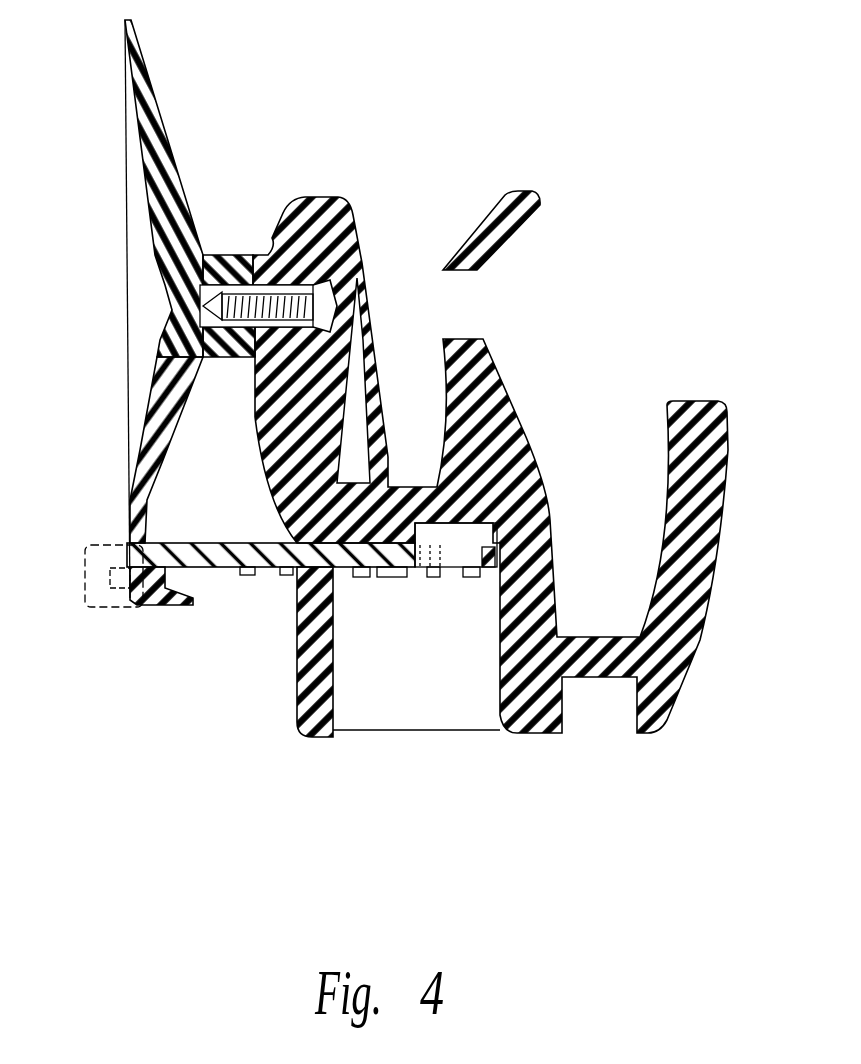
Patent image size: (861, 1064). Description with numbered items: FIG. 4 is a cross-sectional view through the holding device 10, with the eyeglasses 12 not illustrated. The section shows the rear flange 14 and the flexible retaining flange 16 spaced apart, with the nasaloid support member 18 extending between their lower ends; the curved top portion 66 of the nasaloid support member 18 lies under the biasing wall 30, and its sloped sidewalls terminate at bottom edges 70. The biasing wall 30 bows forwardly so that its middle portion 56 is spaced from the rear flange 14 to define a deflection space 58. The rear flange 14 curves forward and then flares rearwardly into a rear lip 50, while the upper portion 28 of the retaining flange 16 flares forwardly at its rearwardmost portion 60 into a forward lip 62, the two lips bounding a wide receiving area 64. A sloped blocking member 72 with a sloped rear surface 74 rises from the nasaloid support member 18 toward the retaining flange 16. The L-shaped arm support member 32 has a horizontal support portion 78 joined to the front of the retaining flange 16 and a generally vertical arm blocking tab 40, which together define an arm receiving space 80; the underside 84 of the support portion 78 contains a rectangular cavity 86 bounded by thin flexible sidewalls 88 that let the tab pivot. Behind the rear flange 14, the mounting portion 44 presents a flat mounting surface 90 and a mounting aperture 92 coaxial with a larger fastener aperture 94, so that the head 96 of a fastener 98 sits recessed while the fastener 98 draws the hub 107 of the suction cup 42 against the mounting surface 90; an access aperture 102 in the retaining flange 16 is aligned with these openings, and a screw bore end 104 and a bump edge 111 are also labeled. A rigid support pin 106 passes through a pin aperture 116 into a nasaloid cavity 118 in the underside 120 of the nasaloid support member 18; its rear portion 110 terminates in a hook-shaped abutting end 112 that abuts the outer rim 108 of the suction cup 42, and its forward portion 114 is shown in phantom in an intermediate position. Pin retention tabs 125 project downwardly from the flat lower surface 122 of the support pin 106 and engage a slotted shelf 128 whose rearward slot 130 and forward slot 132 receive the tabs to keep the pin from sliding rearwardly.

The holding device 10 is at (675, 128).
The eyeglasses 12 is at (114, 576).
The rear flange 14 is at (350, 250).
The retaining flange 16 is at (533, 193).
The nasaloid support member 18 is at (447, 705).
The upper portion 28 is at (480, 247).
The biasing wall 30 is at (378, 352).
The arm support member 32 is at (657, 655).
The arm blocking tab 40 is at (707, 487).
The suction cup 42 is at (162, 185).
The mounting portion 44 is at (287, 240).
The rear lip 50 is at (313, 200).
The middle portion 56 is at (452, 345).
The deflection space 58 is at (478, 355).
The rearwardmost portion 60 is at (441, 336).
The forward lip 62 is at (507, 193).
The receiving area 64 is at (353, 380).
The top portion 66 is at (398, 488).
The bottom edges 70 is at (420, 735).
The blocking member 72 is at (519, 450).
The sloped rear surface 74 is at (498, 402).
The support portion 78 is at (593, 657).
The arm receiving space 80 is at (623, 427).
The underside 84 is at (637, 737).
The rectangular cavity 86 is at (590, 713).
The flexible sidewalls 88 is at (612, 733).
The mounting surface 90 is at (250, 370).
The mounting aperture 92 is at (267, 253).
The fastener aperture 94 is at (357, 218).
The head 96 is at (256, 306).
The fastener 98 is at (237, 262).
The access aperture 102 is at (490, 275).
The screw bore end 104 is at (337, 292).
The support pin 106 is at (247, 553).
The hub 107 is at (125, 222).
The outer rim 108 is at (134, 72).
The rear portion 110 is at (475, 545).
The bump edge 111 is at (347, 253).
The abutting end 112 is at (133, 600).
The forward portion 114 is at (180, 556).
The pin aperture 116 is at (293, 647).
The nasaloid cavity 118 is at (350, 730).
The underside 120 is at (352, 722).
The flat lower surface 122 is at (207, 573).
The pin retention tabs 125 is at (283, 573).
The slotted shelf 128 is at (477, 553).
The rearward slot 130 is at (393, 577).
The forward slot 132 is at (365, 577).